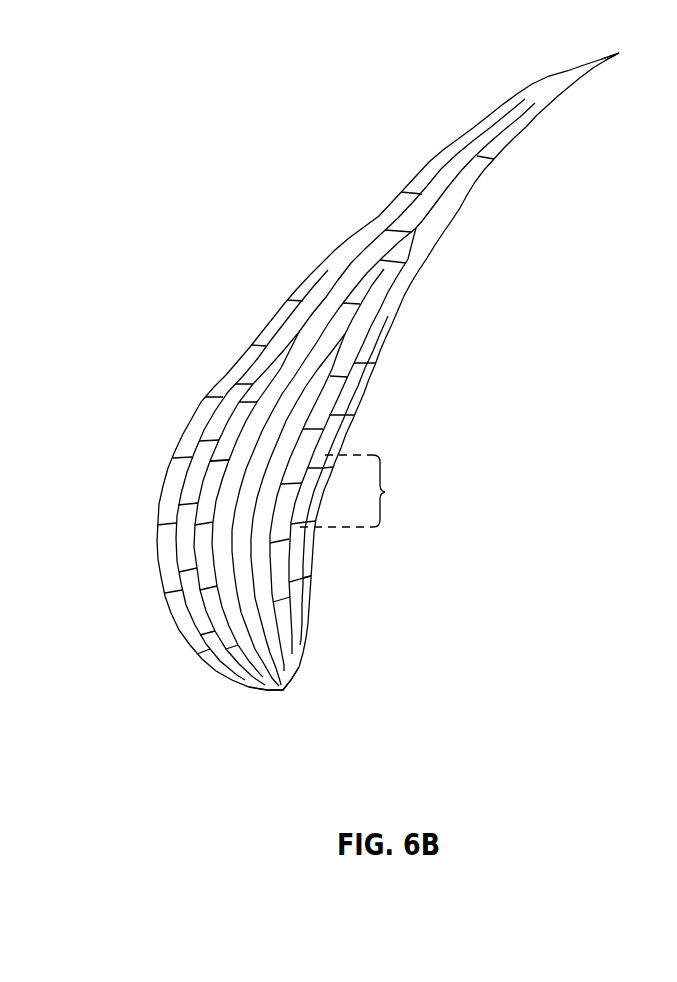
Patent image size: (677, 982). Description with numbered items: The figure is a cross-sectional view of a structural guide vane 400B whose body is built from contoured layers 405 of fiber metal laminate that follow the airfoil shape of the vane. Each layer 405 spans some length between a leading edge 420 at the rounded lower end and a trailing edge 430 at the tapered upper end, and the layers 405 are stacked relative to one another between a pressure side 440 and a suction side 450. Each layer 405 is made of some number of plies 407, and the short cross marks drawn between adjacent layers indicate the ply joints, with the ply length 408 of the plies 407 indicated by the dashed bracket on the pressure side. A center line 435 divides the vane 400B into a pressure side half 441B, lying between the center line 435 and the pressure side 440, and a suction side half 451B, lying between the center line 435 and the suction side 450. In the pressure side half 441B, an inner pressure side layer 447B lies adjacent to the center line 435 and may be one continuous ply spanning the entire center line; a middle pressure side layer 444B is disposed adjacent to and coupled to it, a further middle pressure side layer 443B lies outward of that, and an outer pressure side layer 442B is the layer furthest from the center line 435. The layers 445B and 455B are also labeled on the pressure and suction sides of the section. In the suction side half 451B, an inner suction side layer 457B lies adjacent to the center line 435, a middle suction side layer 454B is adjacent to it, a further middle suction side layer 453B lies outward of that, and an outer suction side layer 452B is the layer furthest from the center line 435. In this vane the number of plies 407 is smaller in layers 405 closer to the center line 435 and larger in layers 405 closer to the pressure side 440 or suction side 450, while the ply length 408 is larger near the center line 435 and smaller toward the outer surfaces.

The vane 400B is at (262, 180).
The layers 405 is at (208, 443).
The plies 407 is at (270, 333).
The ply length 408 is at (366, 491).
The leading edge 420 is at (299, 696).
The trailing edge 430 is at (600, 70).
The center line 435 is at (326, 442).
The pressure side 440 is at (372, 352).
The pressure side half 441B is at (356, 442).
The outer pressure side layer 442B is at (299, 581).
The middle pressure side layer 443B is at (299, 631).
The middle pressure side layer 444B is at (298, 664).
The fifth pressure side layer 445B is at (360, 290).
The inner pressure side layer 447B is at (263, 640).
The suction side 450 is at (160, 522).
The suction side half 451B is at (207, 369).
The outer suction side layer 452B is at (163, 538).
The middle suction side layer 453B is at (184, 586).
The middle suction side layer 454B is at (220, 631).
The fifth suction side layer 455B is at (227, 508).
The inner suction side layer 457B is at (242, 640).